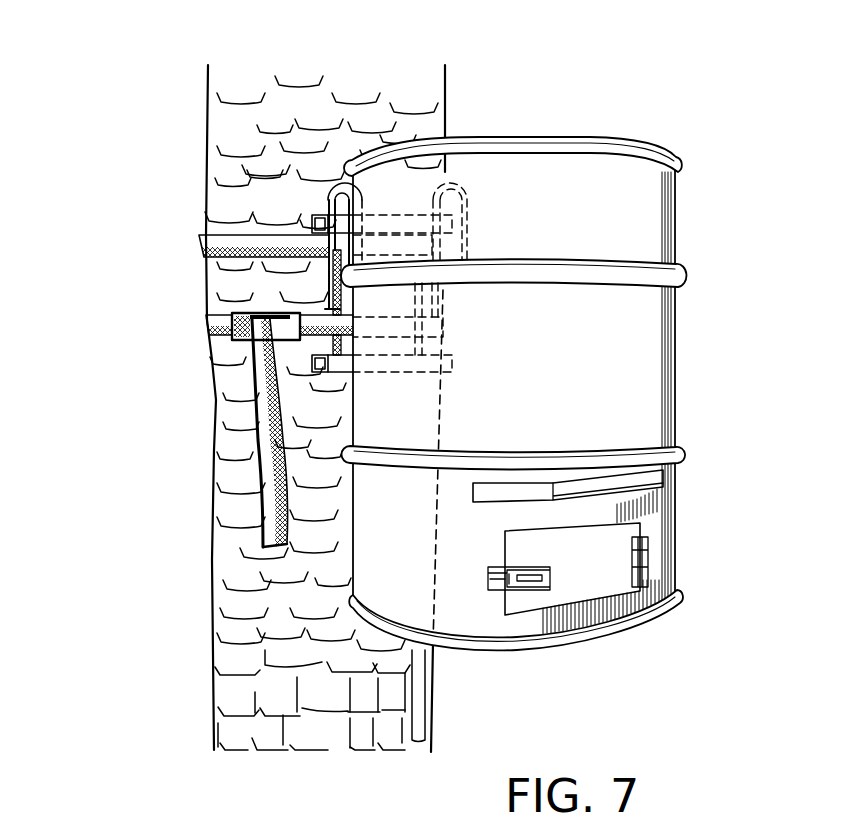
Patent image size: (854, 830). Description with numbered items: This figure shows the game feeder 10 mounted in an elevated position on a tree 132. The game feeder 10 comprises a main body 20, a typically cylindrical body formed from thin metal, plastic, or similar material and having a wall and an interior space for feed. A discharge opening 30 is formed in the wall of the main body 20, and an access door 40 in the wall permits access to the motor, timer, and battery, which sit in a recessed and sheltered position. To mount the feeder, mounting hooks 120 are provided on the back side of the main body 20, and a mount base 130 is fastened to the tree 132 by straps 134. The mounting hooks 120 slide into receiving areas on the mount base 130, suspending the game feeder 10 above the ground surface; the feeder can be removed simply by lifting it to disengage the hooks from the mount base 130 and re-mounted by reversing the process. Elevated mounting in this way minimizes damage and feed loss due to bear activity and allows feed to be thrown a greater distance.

The game feeder 10 is at (720, 128).
The main body 20 is at (673, 358).
The discharge opening 30 is at (673, 478).
The access door 40 is at (598, 588).
The mounting hooks 120 is at (329, 203).
The mount base 130 is at (333, 300).
The tree 132 is at (232, 565).
The straps 134 is at (207, 325).